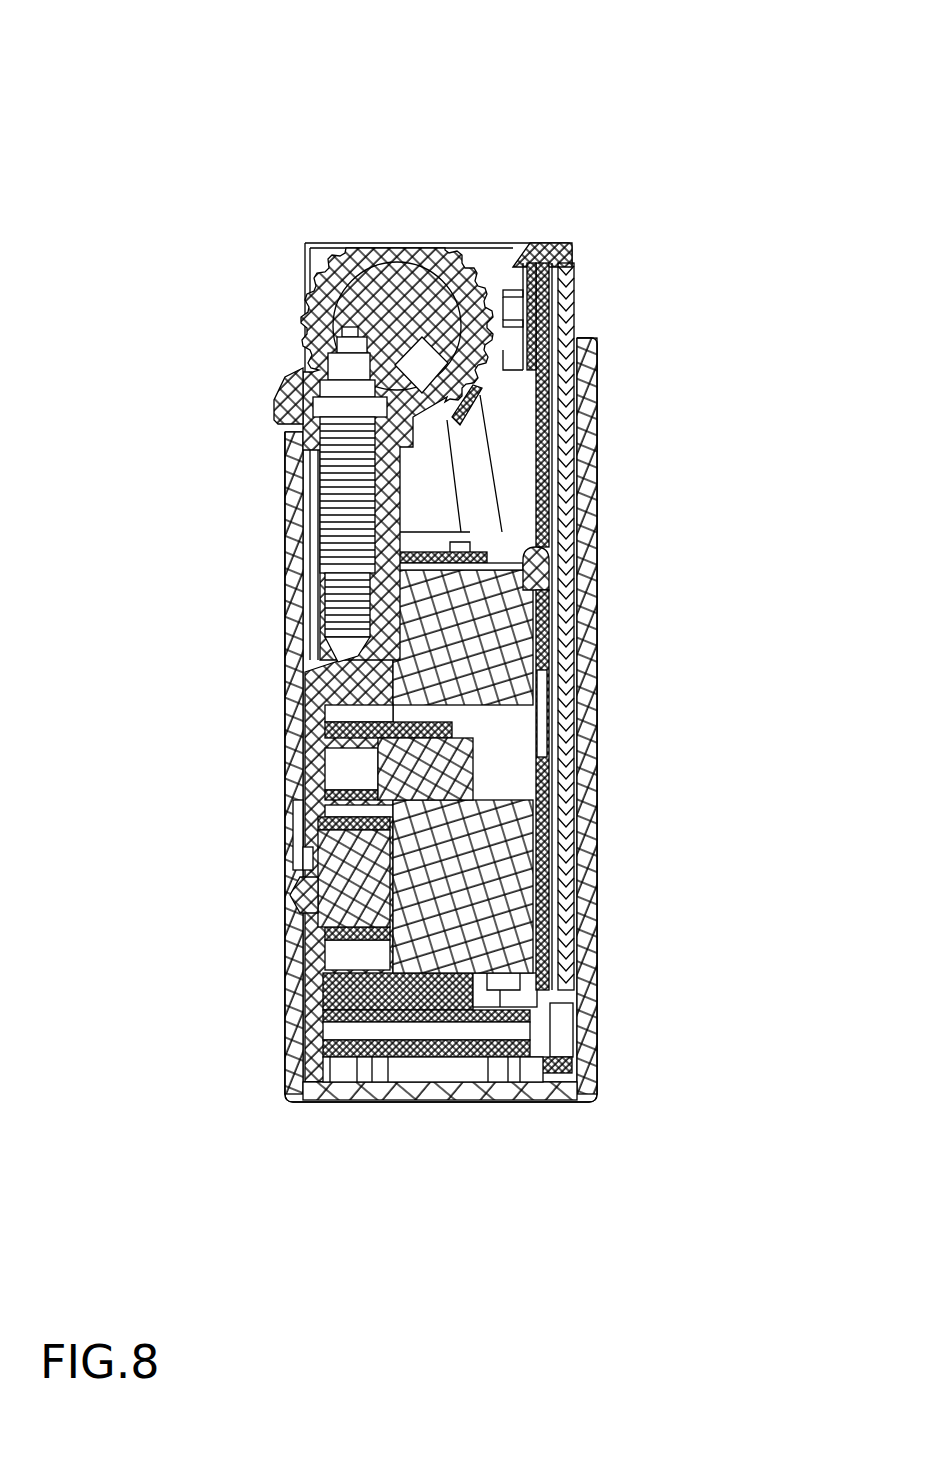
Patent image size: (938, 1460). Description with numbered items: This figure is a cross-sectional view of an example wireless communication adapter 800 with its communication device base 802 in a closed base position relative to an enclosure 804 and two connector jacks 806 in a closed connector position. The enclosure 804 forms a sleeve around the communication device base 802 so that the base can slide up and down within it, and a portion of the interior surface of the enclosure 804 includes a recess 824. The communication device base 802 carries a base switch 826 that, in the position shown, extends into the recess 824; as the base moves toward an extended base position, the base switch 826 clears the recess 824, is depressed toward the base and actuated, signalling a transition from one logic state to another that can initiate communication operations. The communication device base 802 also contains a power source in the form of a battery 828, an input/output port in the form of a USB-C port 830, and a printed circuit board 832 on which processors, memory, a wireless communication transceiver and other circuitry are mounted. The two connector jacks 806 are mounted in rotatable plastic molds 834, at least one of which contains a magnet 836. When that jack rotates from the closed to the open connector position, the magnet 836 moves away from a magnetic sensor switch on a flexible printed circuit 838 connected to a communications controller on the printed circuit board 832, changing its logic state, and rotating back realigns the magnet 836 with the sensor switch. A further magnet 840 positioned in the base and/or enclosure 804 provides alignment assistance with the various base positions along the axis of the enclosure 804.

The wireless communication adapter 800 is at (148, 52).
The communication device base 802 is at (303, 267).
The enclosure 804 is at (594, 460).
The connector jack 806 is at (332, 410).
The recess 824 is at (297, 848).
The base switch 826 is at (300, 892).
The battery 828 is at (517, 883).
The USB-C port 830 is at (433, 1068).
The printed circuit board 832 is at (541, 444).
The rotatable plastic mold 834 is at (380, 288).
The magnet 836 is at (455, 353).
The flexible printed circuit 838 is at (532, 348).
The magnet 840 is at (477, 755).